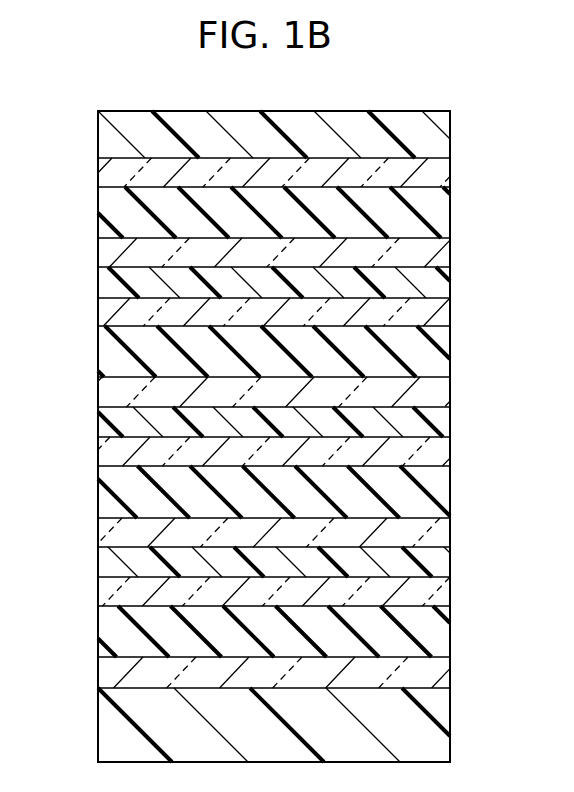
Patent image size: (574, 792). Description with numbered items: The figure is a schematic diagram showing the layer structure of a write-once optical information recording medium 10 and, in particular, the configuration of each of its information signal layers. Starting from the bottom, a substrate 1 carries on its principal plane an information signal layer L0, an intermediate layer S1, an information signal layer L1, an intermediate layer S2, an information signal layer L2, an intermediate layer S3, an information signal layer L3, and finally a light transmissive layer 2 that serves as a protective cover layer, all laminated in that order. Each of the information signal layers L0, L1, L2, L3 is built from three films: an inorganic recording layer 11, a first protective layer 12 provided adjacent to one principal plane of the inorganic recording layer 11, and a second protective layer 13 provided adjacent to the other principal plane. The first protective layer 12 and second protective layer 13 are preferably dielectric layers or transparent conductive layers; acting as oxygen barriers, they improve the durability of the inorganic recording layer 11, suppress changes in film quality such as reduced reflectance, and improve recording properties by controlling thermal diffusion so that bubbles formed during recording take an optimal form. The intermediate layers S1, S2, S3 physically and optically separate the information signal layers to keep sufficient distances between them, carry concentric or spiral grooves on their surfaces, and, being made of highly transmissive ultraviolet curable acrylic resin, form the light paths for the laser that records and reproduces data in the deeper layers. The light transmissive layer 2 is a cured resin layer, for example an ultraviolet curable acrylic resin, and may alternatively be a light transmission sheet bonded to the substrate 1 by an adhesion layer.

The optical information recording medium 10 is at (283, 92).
The light transmissive layer 2 is at (120, 138).
The substrate 1 is at (120, 730).
The second protective layer 13 is at (432, 173).
The inorganic recording layer 11 is at (432, 211).
The first protective layer 12 is at (432, 252).
The information signal layer L3 is at (83, 158).
The information signal layer L2 is at (83, 300).
The information signal layer L1 is at (83, 438).
The information signal layer L0 is at (83, 578).
The intermediate layer S3 is at (118, 286).
The intermediate layer S2 is at (115, 425).
The intermediate layer S1 is at (118, 565).